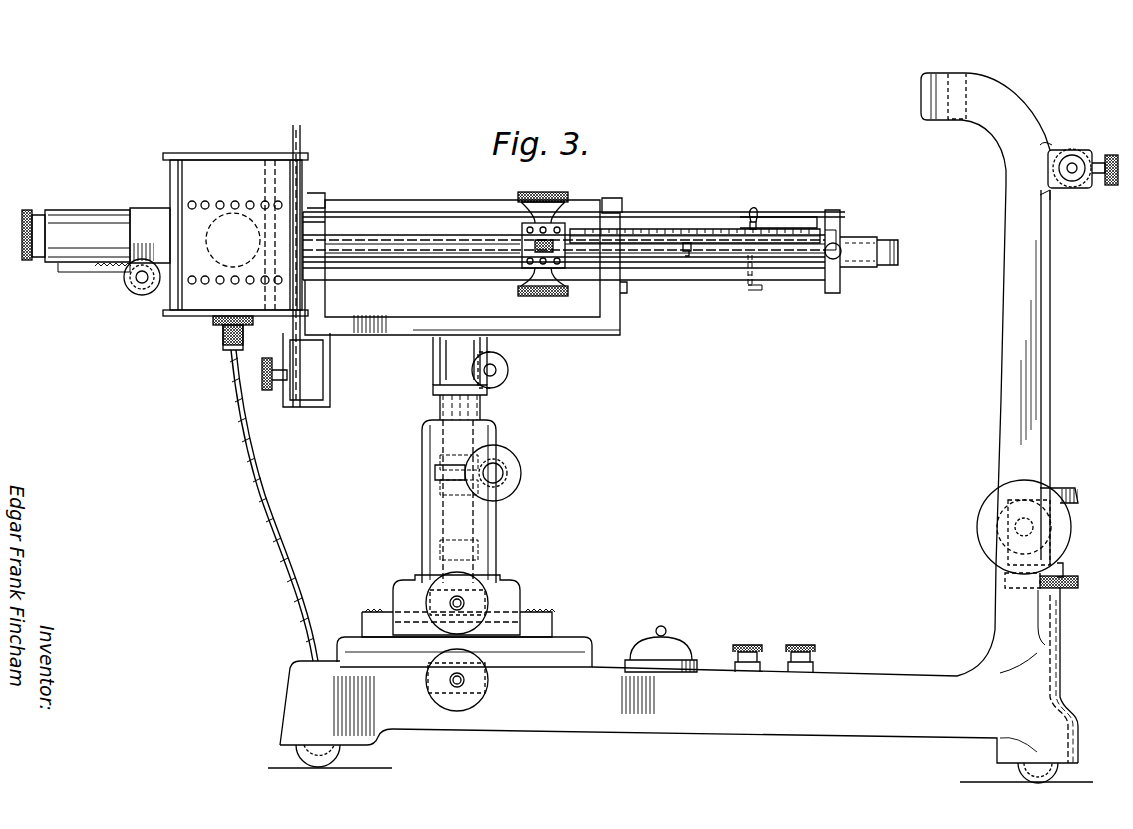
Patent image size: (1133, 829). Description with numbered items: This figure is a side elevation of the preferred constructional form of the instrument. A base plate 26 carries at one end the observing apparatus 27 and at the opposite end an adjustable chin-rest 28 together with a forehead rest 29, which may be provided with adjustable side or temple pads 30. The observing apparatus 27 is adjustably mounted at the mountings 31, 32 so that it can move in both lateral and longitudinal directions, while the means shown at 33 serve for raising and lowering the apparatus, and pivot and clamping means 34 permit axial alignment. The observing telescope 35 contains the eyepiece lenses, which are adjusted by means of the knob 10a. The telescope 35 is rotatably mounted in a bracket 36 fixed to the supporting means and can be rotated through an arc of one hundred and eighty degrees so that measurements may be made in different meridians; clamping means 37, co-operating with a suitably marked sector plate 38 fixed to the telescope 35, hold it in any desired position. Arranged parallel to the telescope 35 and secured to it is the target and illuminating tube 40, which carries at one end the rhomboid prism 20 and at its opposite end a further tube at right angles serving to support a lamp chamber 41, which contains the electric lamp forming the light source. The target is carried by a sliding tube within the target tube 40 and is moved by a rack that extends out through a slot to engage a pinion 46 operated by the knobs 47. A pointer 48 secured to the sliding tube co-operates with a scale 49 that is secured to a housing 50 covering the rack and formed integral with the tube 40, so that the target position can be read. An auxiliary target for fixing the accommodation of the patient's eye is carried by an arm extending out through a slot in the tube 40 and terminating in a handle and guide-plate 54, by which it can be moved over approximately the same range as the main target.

The rhomboid prism 20 is at (894, 243).
The base plate 26 is at (864, 684).
The observing apparatus 27 is at (448, 210).
The adjustable chin-rest 28 is at (1075, 490).
The forehead rest 29 is at (940, 78).
The adjustable side or temple pads 30 is at (1076, 150).
The adjustable mounting 31 is at (480, 652).
The adjustable mounting 32 is at (510, 604).
The raising and lowering means 33 is at (520, 468).
The pivot and clamping means 34 is at (508, 370).
The observing telescope 35 is at (95, 215).
The bracket 36 is at (370, 337).
The clamping means 37 is at (300, 405).
The sector plate 38 is at (302, 140).
The target and illuminating tube 40 is at (368, 215).
The lamp chamber 41 is at (190, 318).
The pinion 46 is at (525, 250).
The knobs 47 is at (568, 208).
The pointer 48 is at (687, 258).
The scale 49 is at (707, 229).
The housing 50 is at (418, 260).
The handle and guide-plate 54 is at (752, 210).
The knob 10a is at (128, 290).